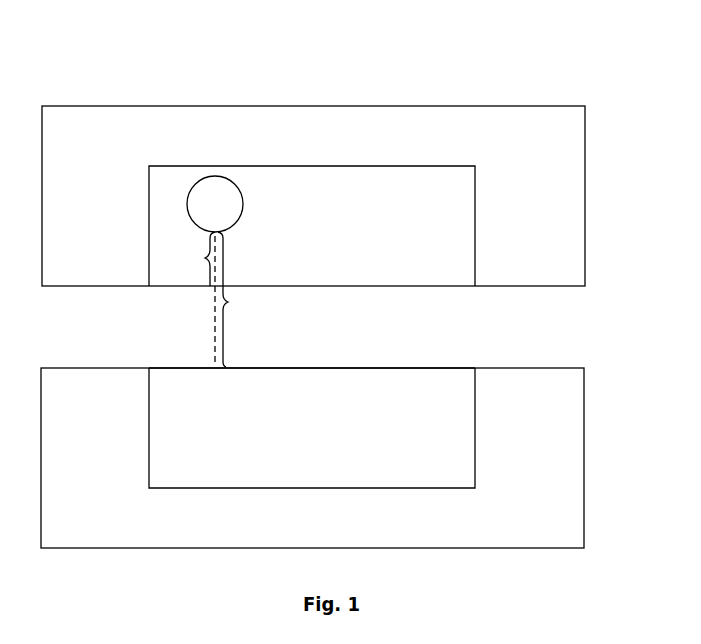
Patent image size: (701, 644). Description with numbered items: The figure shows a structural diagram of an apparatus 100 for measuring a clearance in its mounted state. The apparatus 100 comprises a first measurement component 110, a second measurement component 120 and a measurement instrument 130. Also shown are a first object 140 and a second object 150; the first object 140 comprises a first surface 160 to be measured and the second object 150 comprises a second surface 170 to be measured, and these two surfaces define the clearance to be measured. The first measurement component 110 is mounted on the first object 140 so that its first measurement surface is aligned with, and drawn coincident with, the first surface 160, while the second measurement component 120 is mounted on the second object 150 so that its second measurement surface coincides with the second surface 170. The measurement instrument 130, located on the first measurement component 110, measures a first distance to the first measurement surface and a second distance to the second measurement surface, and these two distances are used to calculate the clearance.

The apparatus for measuring a clearance 100 is at (103, 48).
The first measurement component 110 is at (467, 198).
The second measurement component 120 is at (467, 472).
The measurement instrument 130 is at (232, 213).
The first object 140 is at (577, 173).
The second object 150 is at (575, 457).
The first surface to be measured 160 is at (68, 285).
The second surface to be measured 170 is at (571, 366).